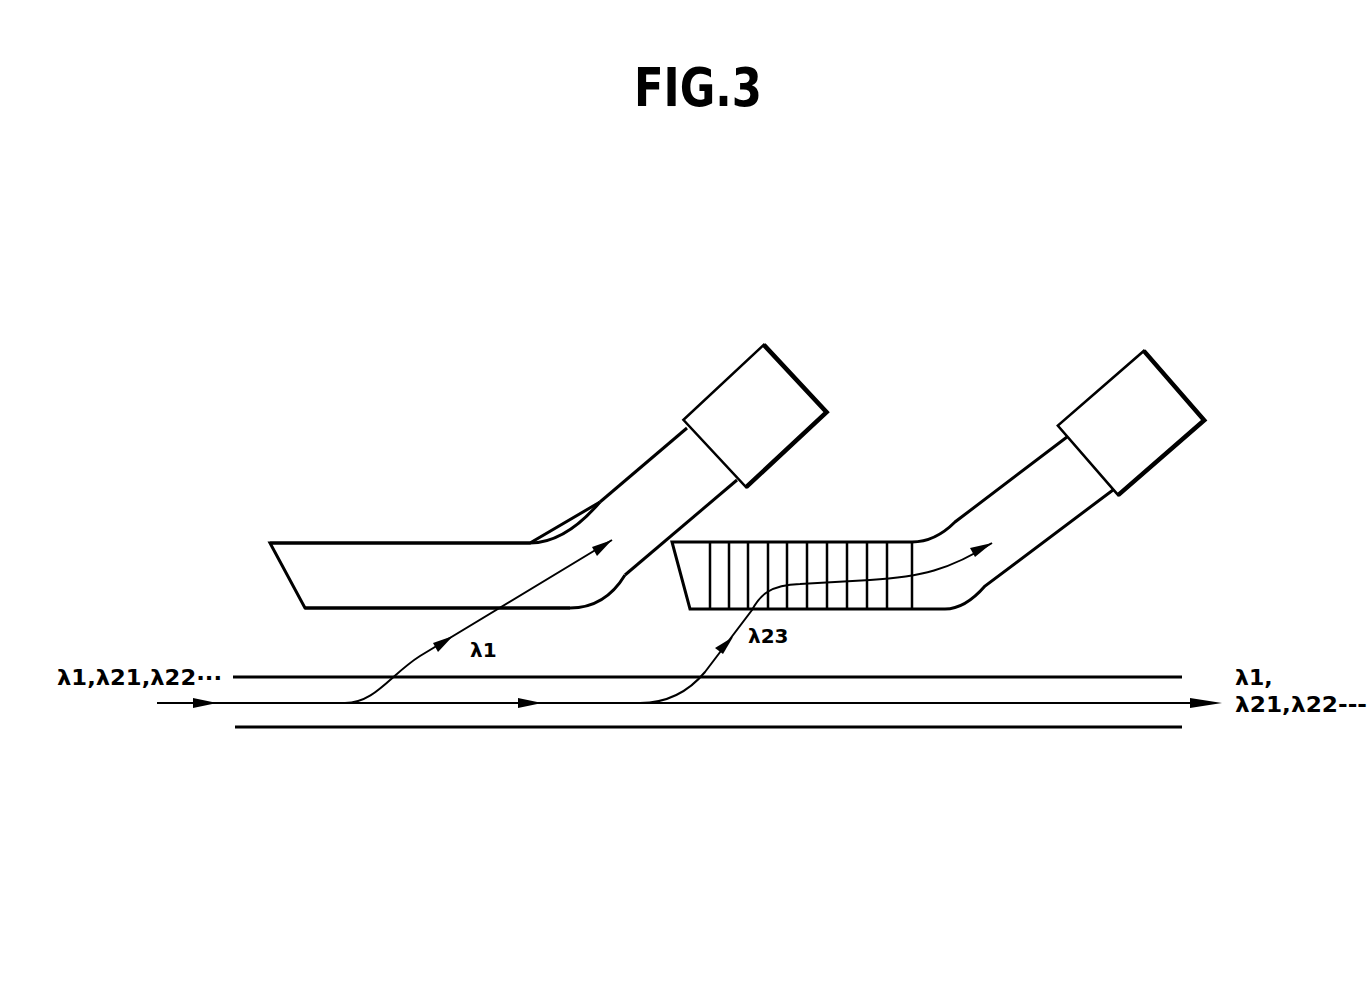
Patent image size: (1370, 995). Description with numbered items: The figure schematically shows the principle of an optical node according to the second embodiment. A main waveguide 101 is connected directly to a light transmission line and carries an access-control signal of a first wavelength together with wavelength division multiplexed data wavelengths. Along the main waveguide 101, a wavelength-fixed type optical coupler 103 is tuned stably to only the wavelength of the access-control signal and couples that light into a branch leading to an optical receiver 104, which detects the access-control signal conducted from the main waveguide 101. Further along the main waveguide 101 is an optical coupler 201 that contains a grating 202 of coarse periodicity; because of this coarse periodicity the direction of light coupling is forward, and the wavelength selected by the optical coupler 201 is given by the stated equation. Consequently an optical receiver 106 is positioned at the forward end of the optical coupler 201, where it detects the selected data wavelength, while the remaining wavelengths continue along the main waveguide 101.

The main waveguide 101 is at (312, 728).
The wavelength-fixed type optical coupler 103 is at (543, 524).
The optical receiver 104 is at (722, 412).
The optical coupler 201 is at (812, 525).
The grating 202 is at (710, 527).
The optical receiver 106 is at (1157, 448).